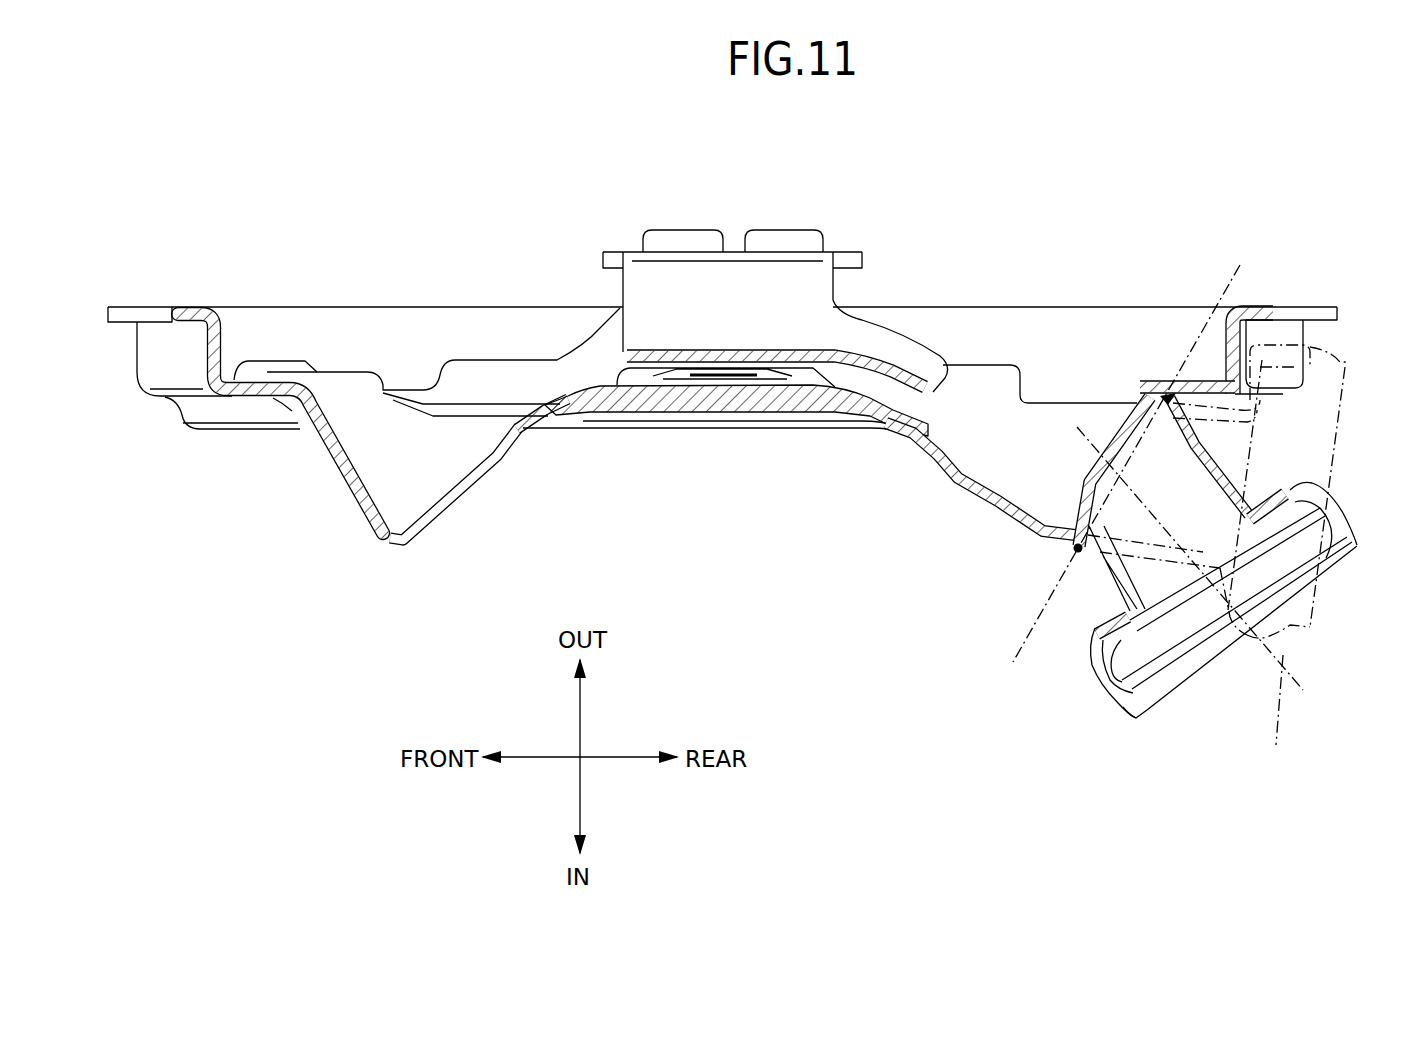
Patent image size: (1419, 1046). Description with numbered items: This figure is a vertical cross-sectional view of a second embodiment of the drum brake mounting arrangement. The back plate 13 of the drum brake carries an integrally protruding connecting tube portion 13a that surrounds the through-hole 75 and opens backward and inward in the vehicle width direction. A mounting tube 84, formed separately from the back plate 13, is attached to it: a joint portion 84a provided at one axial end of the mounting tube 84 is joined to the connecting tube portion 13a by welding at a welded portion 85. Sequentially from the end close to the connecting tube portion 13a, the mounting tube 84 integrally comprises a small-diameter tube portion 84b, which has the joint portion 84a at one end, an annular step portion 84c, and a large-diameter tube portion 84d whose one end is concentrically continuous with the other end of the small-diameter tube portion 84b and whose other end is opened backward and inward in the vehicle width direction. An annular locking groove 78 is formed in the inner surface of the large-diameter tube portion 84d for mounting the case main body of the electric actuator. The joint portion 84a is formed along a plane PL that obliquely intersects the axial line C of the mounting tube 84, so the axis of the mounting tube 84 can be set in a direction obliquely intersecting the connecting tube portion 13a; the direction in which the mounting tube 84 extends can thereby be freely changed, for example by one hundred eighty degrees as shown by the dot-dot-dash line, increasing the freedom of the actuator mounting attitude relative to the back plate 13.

The back plate 13 is at (747, 405).
The connecting tube portion 13a is at (980, 490).
The through-hole 75 is at (1163, 397).
The annular locking groove 78 is at (1325, 560).
The mounting tube 84 is at (1250, 470).
The joint portion 84a is at (1140, 401).
The small-diameter tube portion 84b is at (1107, 565).
The annular step portion 84c is at (1110, 677).
The large-diameter tube portion 84d is at (1130, 718).
The welded portion 85 is at (1074, 550).
The plane PL is at (1230, 298).
The axial line C is at (1284, 712).